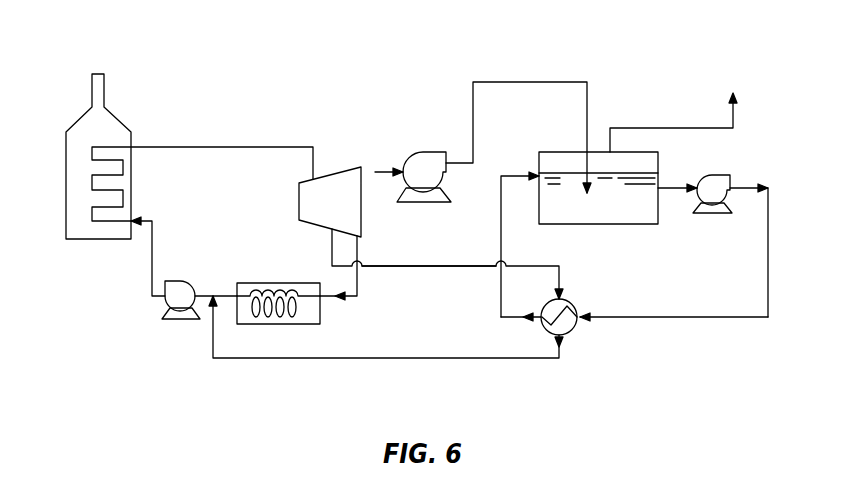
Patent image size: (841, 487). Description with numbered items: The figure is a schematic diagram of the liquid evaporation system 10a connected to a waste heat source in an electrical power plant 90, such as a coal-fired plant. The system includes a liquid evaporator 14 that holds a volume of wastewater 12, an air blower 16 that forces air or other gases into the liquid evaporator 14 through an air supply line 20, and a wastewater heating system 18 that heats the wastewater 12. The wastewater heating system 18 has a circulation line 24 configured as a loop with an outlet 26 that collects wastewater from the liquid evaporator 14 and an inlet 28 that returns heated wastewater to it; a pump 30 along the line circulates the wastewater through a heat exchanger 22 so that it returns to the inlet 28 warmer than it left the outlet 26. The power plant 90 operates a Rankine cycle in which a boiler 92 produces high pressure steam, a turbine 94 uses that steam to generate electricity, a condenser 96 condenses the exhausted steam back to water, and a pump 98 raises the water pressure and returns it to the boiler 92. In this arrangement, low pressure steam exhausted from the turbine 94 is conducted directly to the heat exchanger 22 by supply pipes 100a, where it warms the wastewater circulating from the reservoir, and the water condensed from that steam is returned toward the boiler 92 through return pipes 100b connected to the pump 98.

The liquid evaporation system 10a is at (680, 52).
The wastewater 12 is at (627, 217).
The liquid evaporator 14 is at (640, 152).
The air blower 16 is at (411, 153).
The wastewater heating system 18 is at (772, 272).
The air supply line 20 is at (505, 82).
The heat exchanger 22 is at (571, 331).
The circulation line 24 is at (718, 318).
The outlet 26 is at (660, 186).
The inlet 28 is at (537, 176).
The pump 30 is at (722, 178).
The electrical power plant 90 is at (104, 311).
The boiler 92 is at (66, 186).
The turbine 94 is at (342, 170).
The condenser 96 is at (258, 283).
The pump 98 is at (172, 282).
The supply pipes 100a is at (425, 266).
The return pipes 100b is at (433, 360).